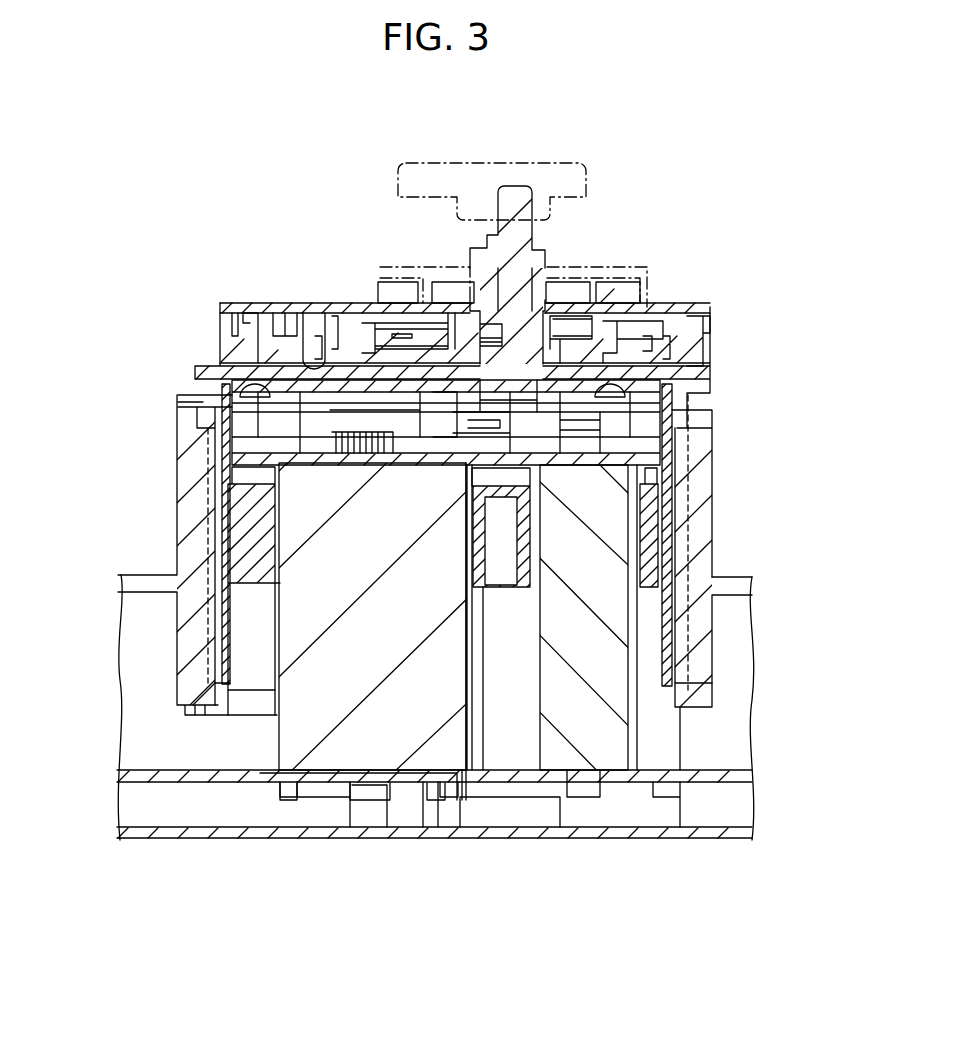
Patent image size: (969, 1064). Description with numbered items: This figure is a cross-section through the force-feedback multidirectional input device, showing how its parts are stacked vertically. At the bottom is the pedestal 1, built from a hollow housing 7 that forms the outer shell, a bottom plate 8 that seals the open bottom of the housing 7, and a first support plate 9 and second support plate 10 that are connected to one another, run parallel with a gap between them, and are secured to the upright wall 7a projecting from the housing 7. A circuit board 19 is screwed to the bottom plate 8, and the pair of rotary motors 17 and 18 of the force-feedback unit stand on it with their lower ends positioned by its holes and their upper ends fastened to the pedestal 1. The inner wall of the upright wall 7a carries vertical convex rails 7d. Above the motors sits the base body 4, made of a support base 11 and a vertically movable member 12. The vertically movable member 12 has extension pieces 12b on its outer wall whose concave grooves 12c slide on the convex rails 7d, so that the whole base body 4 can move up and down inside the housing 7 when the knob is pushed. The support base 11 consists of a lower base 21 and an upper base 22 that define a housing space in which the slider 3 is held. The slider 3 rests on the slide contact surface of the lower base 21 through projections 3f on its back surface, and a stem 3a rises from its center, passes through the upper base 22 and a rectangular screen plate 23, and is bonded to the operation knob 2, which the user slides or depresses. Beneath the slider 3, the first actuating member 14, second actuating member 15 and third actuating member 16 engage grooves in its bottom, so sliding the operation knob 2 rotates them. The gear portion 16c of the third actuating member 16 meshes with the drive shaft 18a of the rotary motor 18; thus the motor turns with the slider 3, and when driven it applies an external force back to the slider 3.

The pedestal 1 is at (58, 664).
The operation knob 2 is at (598, 186).
The slider 3 is at (640, 332).
The stem 3a is at (524, 243).
The projections 3f is at (332, 388).
The base body 4 is at (812, 310).
The housing 7 is at (120, 588).
The upright wall 7a is at (715, 490).
The convex rails 7d is at (215, 700).
The bottom plate 8 is at (183, 833).
The first support plate 9 is at (215, 425).
The second support plate 10 is at (313, 462).
The support base 11 is at (772, 300).
The vertically movable member 12 is at (716, 424).
The extension pieces 12b is at (228, 396).
The concave grooves 12c is at (688, 572).
The first actuating member 14 is at (415, 420).
The second actuating member 15 is at (296, 390).
The third actuating member 16 is at (520, 385).
The gear portion 16c is at (550, 470).
The rotary motor 17 is at (315, 758).
The rotary motor 18 is at (628, 667).
The drive shaft 18a is at (600, 437).
The circuit board 19 is at (722, 777).
The lower base 21 is at (712, 362).
The upper base 22 is at (712, 313).
The screen plate 23 is at (640, 270).